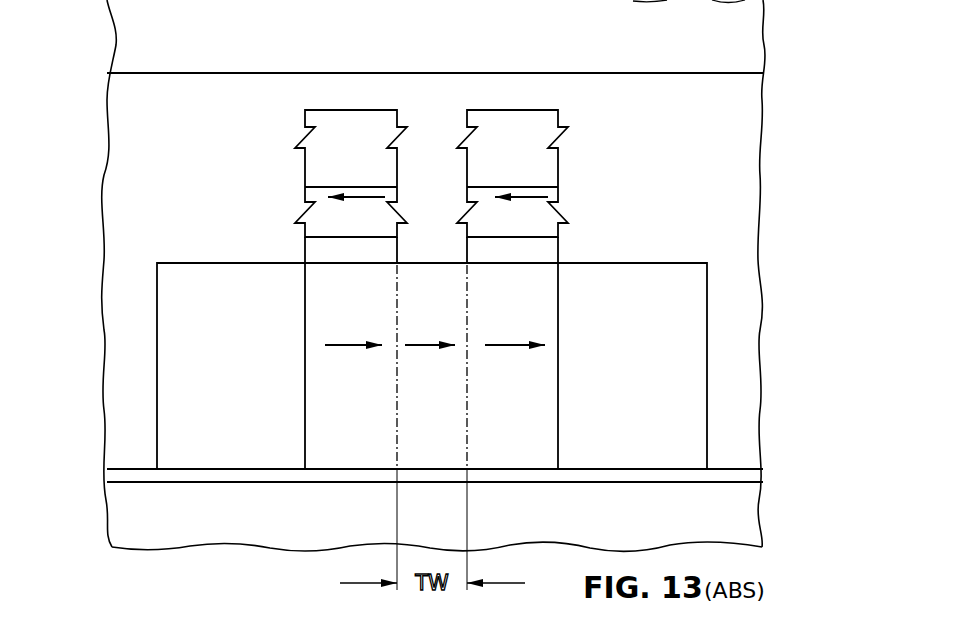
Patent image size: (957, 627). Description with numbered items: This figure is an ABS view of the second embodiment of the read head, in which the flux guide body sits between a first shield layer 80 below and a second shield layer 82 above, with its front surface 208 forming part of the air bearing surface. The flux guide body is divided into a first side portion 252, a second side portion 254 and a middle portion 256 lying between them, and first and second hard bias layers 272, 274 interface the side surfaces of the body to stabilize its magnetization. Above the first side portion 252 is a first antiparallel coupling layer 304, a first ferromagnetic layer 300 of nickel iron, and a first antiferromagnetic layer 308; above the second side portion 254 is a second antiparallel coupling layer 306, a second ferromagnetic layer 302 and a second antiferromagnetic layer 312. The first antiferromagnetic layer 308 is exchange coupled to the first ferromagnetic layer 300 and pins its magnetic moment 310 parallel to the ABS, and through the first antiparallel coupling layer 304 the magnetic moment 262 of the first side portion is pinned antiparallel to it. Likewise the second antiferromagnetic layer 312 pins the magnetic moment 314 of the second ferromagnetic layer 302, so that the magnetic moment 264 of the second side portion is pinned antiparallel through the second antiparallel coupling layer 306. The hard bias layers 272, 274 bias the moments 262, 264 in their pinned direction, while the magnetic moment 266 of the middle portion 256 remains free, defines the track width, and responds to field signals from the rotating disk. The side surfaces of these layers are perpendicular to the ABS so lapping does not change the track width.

The first shield layer 80 is at (212, 533).
The second shield layer 82 is at (127, 42).
The front surface 208 is at (413, 307).
The first side portion 252 is at (316, 422).
The second side portion 254 is at (548, 422).
The middle portion 256 is at (447, 453).
The magnetic moment of first side portion 262 is at (343, 350).
The magnetic moment of second side portion 264 is at (503, 350).
The magnetic moment of middle portion 266 is at (413, 350).
The first hard bias layer 272 is at (172, 303).
The second hard bias layer 274 is at (697, 313).
The first ferromagnetic layer 300 is at (311, 189).
The second ferromagnetic layer 302 is at (550, 193).
The first antiparallel coupling layer 304 is at (312, 249).
The second antiparallel coupling layer 306 is at (552, 250).
The first antiferromagnetic layer 308 is at (311, 120).
The magnetic moment of first ferromagnetic layer 310 is at (368, 197).
The second antiferromagnetic layer 312 is at (552, 121).
The magnetic moment of second ferromagnetic layer 314 is at (527, 197).